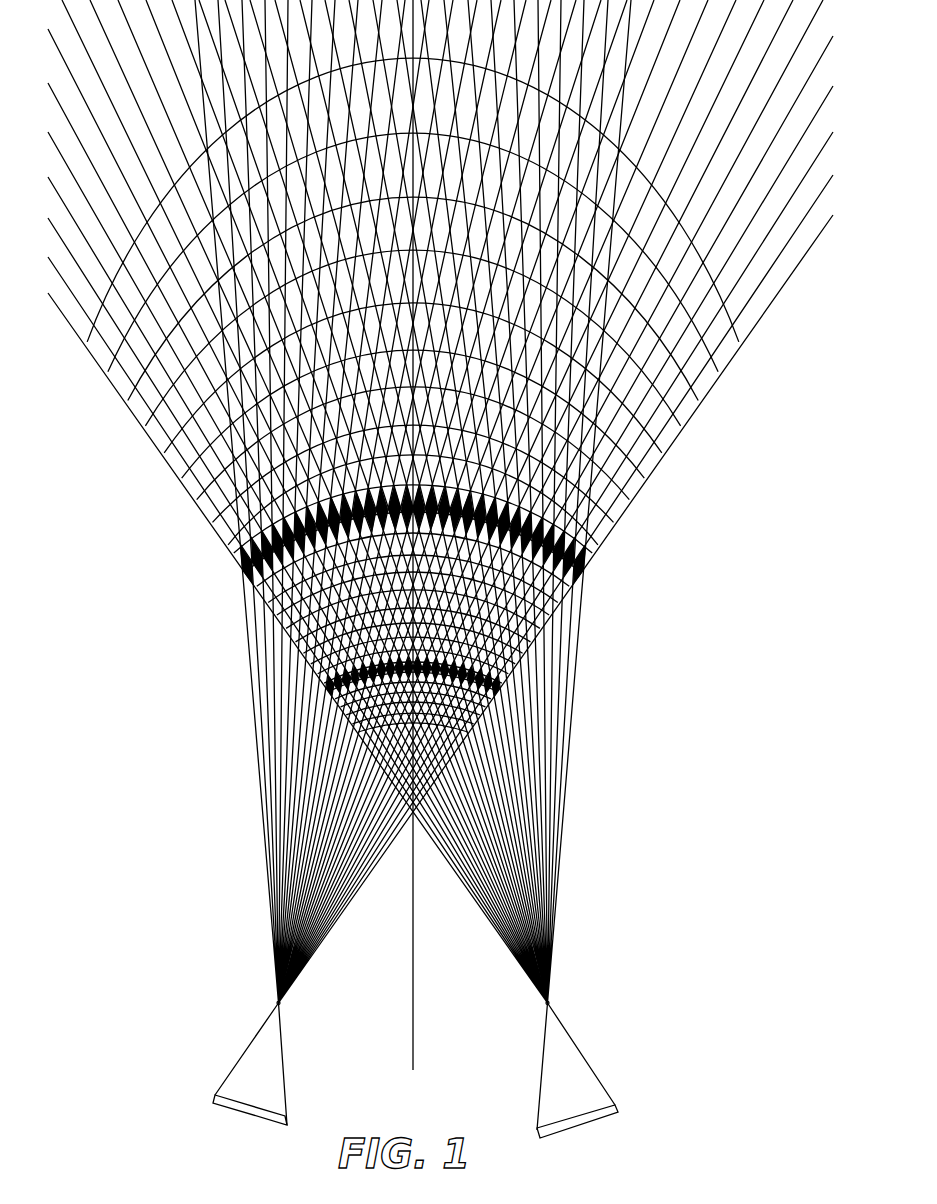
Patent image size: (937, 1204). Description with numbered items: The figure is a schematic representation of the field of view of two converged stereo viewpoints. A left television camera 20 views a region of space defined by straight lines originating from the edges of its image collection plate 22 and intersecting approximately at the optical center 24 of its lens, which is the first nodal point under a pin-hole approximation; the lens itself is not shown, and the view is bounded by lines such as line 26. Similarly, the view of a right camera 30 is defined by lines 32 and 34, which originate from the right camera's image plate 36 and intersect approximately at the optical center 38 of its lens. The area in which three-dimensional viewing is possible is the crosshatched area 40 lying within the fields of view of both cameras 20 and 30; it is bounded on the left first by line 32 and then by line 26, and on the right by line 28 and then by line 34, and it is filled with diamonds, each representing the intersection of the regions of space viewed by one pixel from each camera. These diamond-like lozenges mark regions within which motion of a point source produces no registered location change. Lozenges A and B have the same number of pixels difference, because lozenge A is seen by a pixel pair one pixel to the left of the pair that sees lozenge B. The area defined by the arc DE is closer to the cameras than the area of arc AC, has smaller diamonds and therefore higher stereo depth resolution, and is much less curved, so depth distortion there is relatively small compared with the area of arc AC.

The left television camera 20 is at (238, 1064).
The image collection plate 22 is at (222, 1110).
The optical center 24 is at (282, 1003).
The view-defining line 26 is at (268, 913).
The view-defining line 28 is at (332, 930).
The right television camera 30 is at (628, 1057).
The view-defining line 32 is at (506, 947).
The view-defining line 34 is at (556, 948).
The image plate 36 is at (616, 1120).
The optical center 38 is at (549, 1004).
The three-dimensional viewing area 40 is at (410, 640).
The lozenge A is at (588, 572).
The lozenge B is at (584, 561).
The arc endpoint C is at (238, 563).
The arc endpoint D is at (500, 689).
The arc endpoint E is at (326, 691).